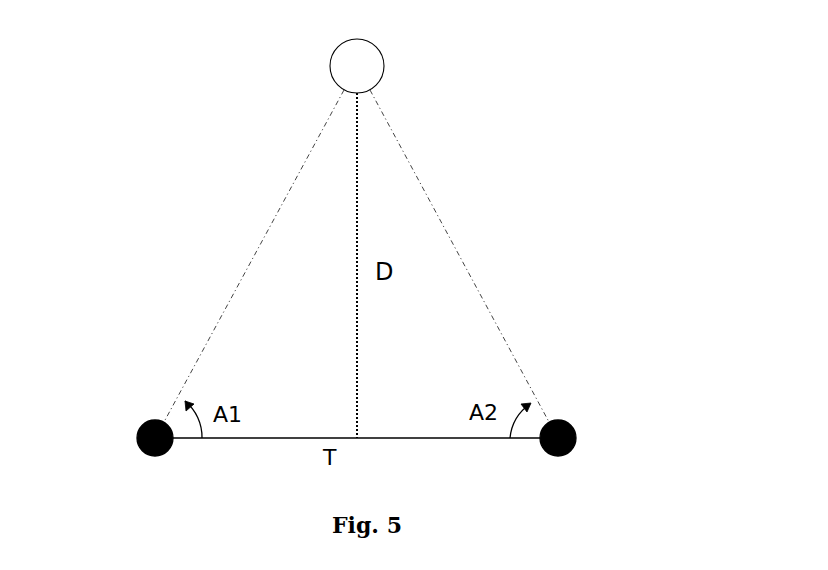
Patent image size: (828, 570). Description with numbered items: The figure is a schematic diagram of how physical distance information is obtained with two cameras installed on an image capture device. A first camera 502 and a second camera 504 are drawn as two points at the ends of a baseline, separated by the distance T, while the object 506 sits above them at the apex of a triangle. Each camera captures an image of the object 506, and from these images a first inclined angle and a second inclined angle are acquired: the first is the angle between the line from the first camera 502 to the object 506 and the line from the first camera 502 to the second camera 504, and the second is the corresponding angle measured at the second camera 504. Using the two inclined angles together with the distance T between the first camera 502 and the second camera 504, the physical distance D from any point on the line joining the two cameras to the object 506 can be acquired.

The first camera 502 is at (170, 451).
The second camera 504 is at (536, 448).
The object 506 is at (376, 66).